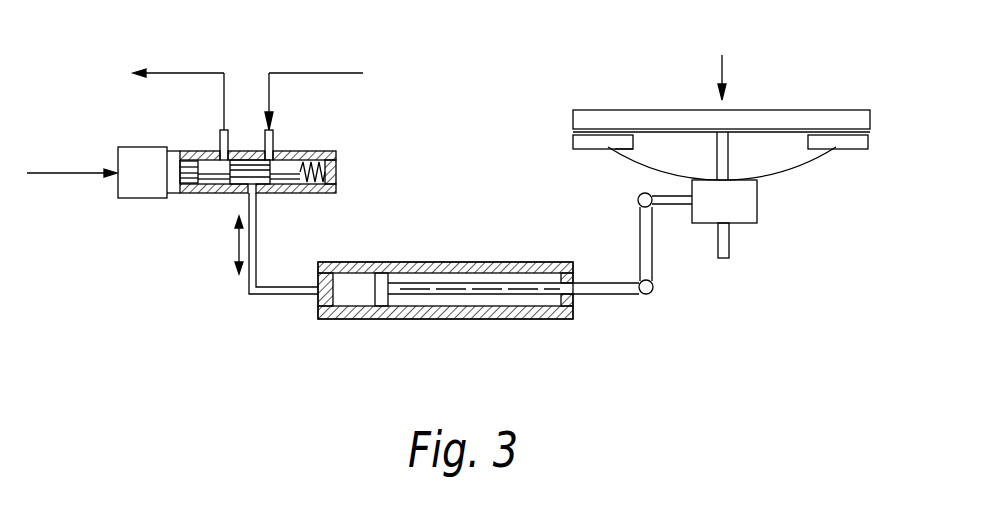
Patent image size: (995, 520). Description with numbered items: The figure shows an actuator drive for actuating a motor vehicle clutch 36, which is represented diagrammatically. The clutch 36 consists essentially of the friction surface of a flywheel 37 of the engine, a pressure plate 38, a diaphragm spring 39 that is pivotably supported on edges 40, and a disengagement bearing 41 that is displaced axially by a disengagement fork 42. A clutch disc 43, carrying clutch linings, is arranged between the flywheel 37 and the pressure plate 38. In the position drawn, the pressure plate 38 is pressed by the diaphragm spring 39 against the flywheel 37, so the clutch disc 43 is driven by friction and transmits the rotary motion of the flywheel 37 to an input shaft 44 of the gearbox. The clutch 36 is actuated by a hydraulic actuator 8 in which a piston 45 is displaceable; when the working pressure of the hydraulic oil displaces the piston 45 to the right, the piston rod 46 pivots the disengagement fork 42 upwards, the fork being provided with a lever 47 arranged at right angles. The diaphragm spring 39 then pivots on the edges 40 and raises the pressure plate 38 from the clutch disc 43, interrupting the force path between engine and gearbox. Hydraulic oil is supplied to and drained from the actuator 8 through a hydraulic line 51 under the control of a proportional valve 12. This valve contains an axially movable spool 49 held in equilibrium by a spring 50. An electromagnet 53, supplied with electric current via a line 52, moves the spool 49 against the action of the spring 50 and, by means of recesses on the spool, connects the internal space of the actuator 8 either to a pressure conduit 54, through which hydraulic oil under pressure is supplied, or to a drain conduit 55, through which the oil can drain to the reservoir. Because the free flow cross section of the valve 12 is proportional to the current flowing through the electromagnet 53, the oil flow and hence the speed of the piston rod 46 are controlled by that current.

The hydraulic actuator 8 is at (483, 315).
The proportional valve 12 is at (265, 157).
The clutch 36 is at (718, 59).
The flywheel 37 is at (573, 116).
The pressure plate 38 is at (573, 142).
The diaphragm spring 39 is at (778, 172).
The edges 40 is at (634, 154).
The disengagement bearing 41 is at (740, 212).
The disengagement fork 42 is at (685, 207).
The clutch disc 43 is at (770, 133).
The input shaft 44 is at (727, 260).
The piston 45 is at (384, 306).
The piston rod 46 is at (618, 296).
The lever 47 is at (640, 236).
The spool 49 is at (286, 172).
The spring 50 is at (338, 177).
The hydraulic line 51 is at (274, 294).
The line 52 is at (57, 176).
The electromagnet 53 is at (137, 170).
The pressure conduit 54 is at (275, 140).
The drain conduit 55 is at (223, 140).